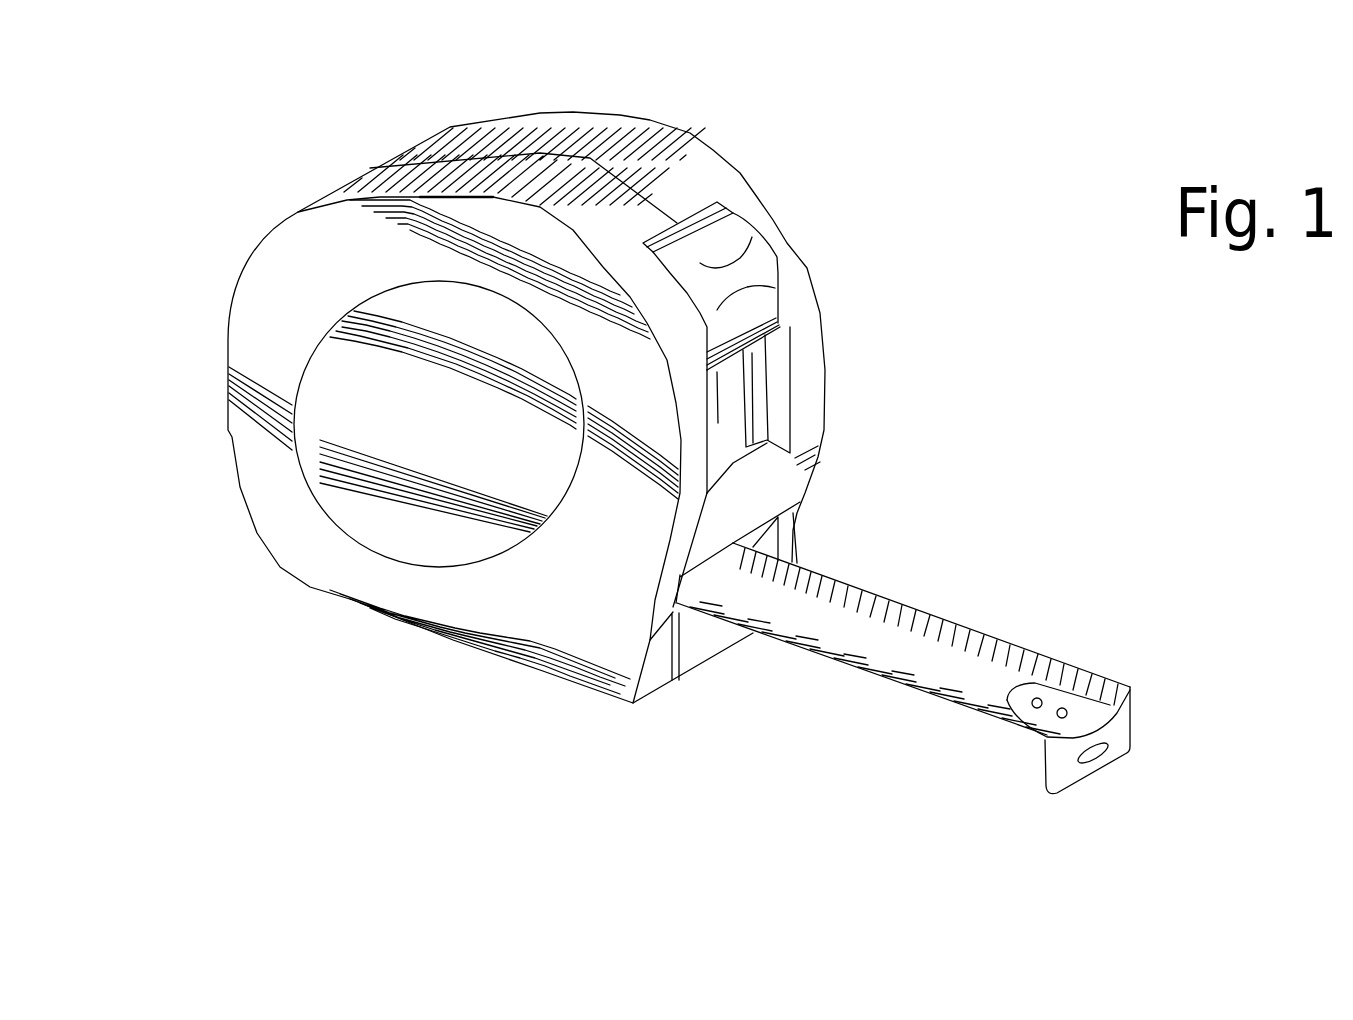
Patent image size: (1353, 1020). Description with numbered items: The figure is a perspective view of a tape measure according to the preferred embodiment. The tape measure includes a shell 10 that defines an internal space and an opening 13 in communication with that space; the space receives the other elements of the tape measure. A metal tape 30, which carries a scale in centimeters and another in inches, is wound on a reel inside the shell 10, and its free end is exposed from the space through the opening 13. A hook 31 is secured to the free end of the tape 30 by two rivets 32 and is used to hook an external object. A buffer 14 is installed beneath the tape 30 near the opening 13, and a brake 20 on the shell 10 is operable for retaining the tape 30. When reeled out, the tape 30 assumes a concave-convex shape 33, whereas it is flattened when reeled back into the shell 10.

The shell 10 is at (295, 268).
The opening 13 is at (800, 503).
The buffer 14 is at (700, 640).
The brake 20 is at (720, 248).
The tape 30 is at (903, 645).
The hook 31 is at (1062, 767).
The rivets 32 is at (1066, 703).
The concave-convex shape 33 is at (891, 593).